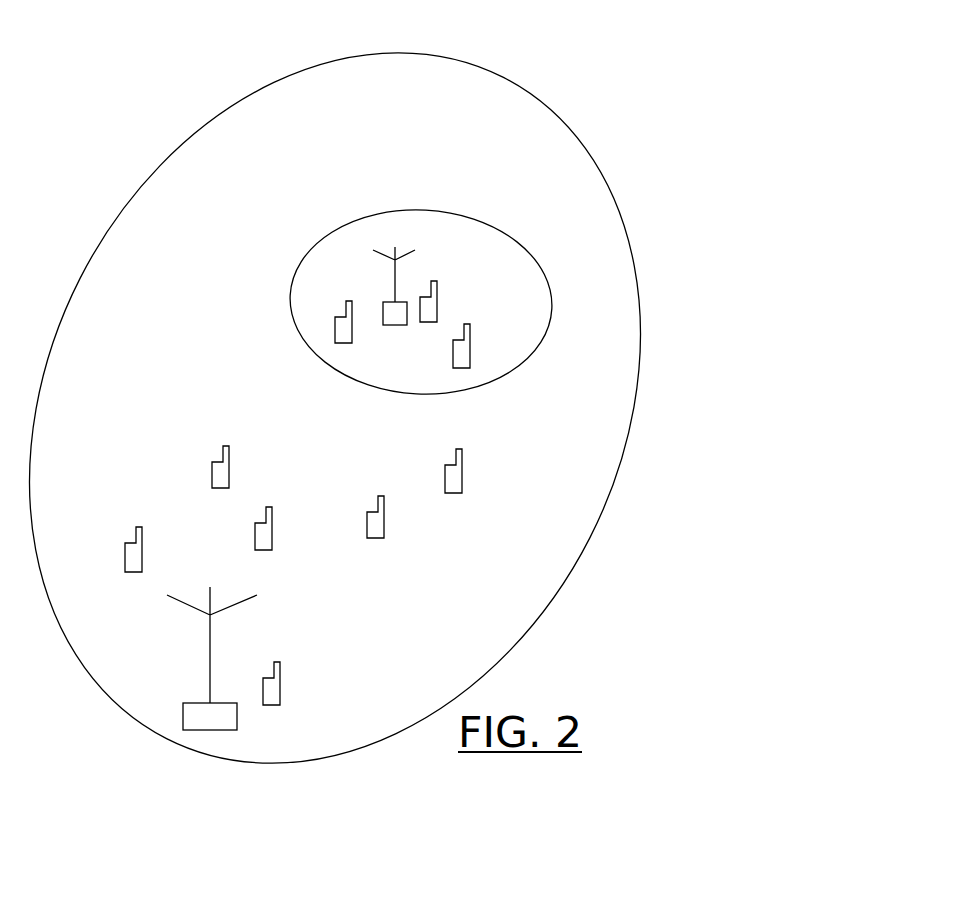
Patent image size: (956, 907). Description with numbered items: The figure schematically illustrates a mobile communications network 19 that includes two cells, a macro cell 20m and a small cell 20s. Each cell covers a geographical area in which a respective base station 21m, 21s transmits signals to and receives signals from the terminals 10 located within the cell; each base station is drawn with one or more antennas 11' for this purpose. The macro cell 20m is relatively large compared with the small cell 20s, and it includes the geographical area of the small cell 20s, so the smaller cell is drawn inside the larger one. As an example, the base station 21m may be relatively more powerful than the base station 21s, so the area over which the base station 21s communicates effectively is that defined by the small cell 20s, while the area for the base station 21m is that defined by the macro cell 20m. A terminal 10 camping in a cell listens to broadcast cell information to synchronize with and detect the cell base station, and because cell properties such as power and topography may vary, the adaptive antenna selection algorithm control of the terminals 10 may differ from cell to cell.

The network 19 is at (620, 90).
The small cell 20s is at (481, 252).
The macro cell 20m is at (596, 266).
The base station 21s is at (383, 305).
The base station 21m is at (183, 716).
The antenna 11' is at (327, 437).
The terminal 10 is at (470, 350).